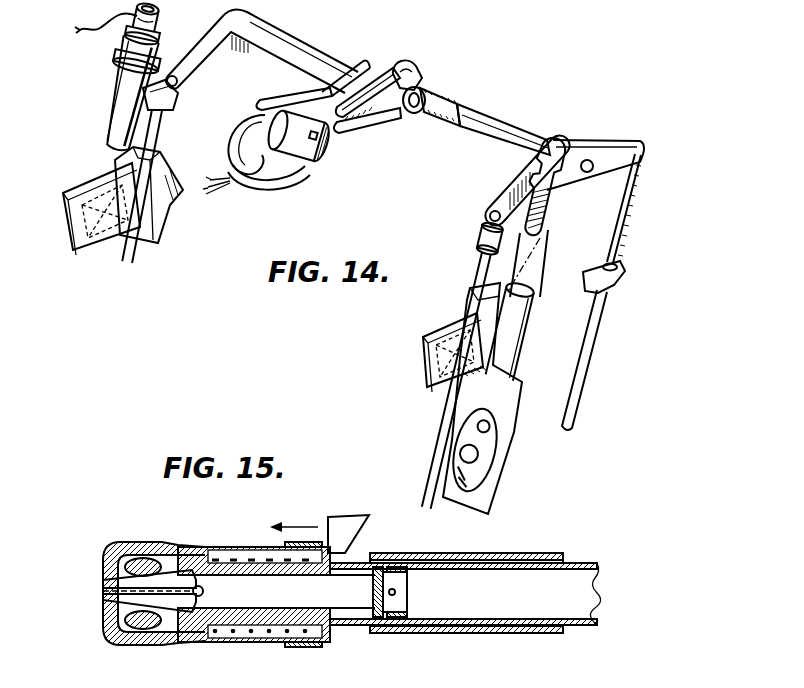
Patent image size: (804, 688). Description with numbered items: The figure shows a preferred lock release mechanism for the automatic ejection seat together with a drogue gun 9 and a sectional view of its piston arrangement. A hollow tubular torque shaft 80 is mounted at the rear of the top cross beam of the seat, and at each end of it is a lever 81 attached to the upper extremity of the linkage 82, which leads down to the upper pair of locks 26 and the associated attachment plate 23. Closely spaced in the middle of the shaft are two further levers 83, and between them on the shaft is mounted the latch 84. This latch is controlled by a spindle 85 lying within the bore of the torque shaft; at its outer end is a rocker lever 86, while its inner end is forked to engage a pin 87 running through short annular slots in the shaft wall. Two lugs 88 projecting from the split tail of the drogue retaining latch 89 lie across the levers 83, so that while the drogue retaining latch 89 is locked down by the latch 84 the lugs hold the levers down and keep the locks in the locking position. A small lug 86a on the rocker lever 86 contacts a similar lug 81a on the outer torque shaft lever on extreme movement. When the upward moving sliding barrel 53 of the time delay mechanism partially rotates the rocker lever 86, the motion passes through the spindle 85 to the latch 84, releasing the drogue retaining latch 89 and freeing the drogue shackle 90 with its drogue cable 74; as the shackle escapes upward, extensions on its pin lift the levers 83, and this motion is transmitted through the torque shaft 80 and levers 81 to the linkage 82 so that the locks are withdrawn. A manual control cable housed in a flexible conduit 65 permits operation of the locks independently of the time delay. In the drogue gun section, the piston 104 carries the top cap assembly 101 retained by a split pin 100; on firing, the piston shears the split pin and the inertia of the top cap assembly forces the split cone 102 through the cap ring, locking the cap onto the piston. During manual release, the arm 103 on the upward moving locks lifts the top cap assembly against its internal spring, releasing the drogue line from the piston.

In FIG. 14, the drogue gun 9 is at (106, 129).
In FIG. 15, the drogue gun 9 is at (453, 633).
In FIG. 14, the top cap assembly 101 is at (160, 25).
In FIG. 15, the top cap assembly 101 is at (131, 545).
In FIG. 14, the split cone 102 is at (122, 46).
In FIG. 15, the split cone 102 is at (150, 606).
In FIG. 14, the arm 103 is at (123, 97).
In FIG. 15, the arm 103 is at (360, 527).
In FIG. 15, the piston 104 is at (581, 562).
In FIG. 15, the split pin 100 is at (398, 593).
In FIG. 14, the lever 81 is at (202, 62).
In FIG. 14, the lug 81a is at (530, 160).
In FIG. 14, the levers 83 is at (298, 103).
In FIG. 14, the lugs 88 is at (338, 92).
In FIG. 14, the latch 84 is at (414, 72).
In FIG. 14, the pin 87 is at (423, 88).
In FIG. 14, the spindle 85 is at (462, 104).
In FIG. 14, the hollow tubular torque shaft 80 is at (489, 121).
In FIG. 14, the drogue retaining latch 89 is at (318, 138).
In FIG. 14, the drogue shackle 90 is at (281, 178).
In FIG. 14, the drogue cable 74 is at (212, 182).
In FIG. 14, the rocker lever 86 is at (562, 200).
In FIG. 14, the small lug 86a is at (547, 190).
In FIG. 14, the flexible conduit 65 is at (587, 347).
In FIG. 14, the linkage 82 is at (164, 123).
In FIG. 14, the upper pair of locks 26 is at (163, 205).
In FIG. 14, the plate 23 is at (92, 244).
In FIG. 14, the sliding barrel 53 is at (507, 350).